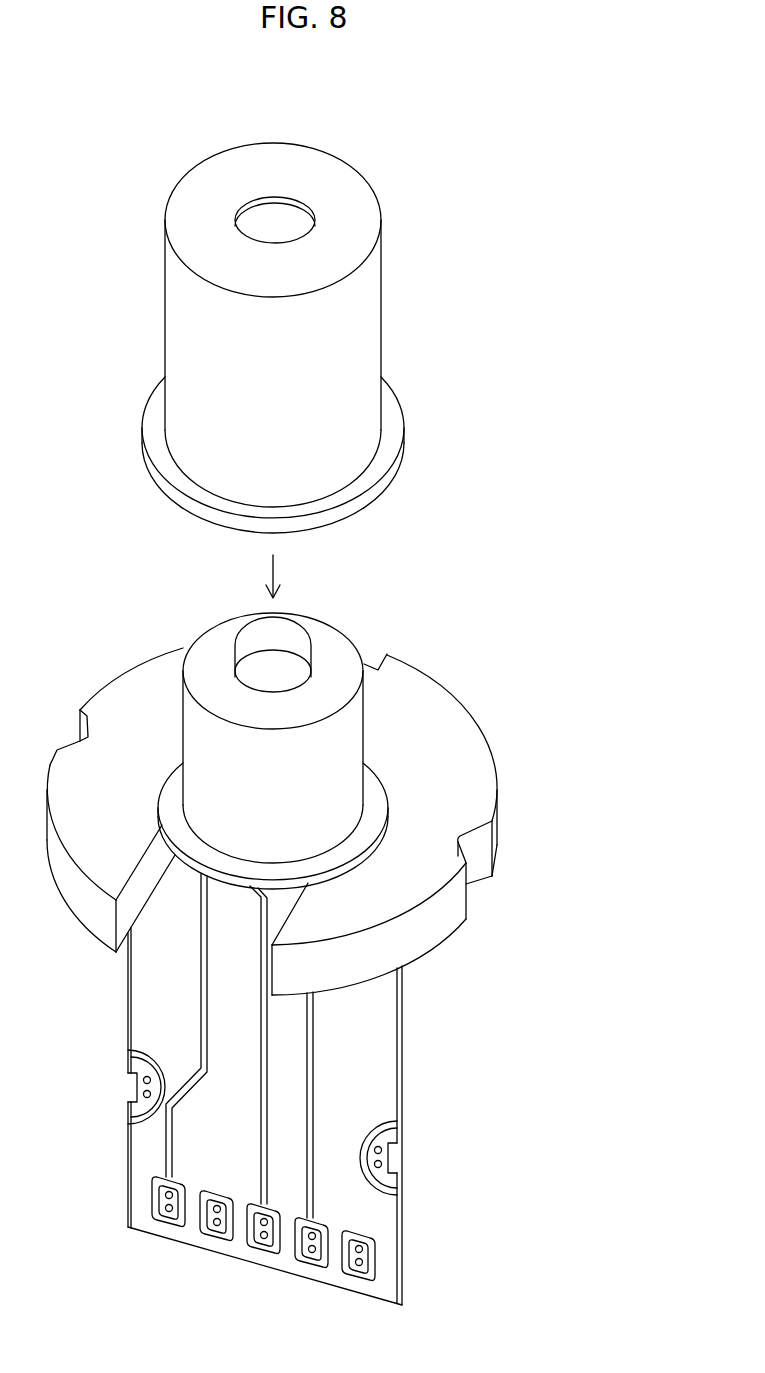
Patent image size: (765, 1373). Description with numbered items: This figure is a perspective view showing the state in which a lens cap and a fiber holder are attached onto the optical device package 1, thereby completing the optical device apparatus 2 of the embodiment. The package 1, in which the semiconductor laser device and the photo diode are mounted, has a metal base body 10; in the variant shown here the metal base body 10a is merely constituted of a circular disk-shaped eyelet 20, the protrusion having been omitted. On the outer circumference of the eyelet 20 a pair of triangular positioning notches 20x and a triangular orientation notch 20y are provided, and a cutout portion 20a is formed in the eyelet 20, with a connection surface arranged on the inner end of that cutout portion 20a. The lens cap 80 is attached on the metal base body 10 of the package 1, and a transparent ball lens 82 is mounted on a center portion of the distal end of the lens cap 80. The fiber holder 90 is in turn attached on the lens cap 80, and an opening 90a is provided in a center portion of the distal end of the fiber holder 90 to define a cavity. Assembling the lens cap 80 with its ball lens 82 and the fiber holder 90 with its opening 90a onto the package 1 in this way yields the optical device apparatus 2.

The optical device package 1 is at (403, 1067).
The optical device apparatus 2 is at (508, 510).
The metal base body 10 is at (327, 798).
The metal base body 10a is at (337, 821).
The eyelet 20 is at (462, 778).
The cutout portion 20a is at (160, 883).
The positioning notches 20x is at (80, 730).
The orientation notch 20y is at (372, 667).
The lens cap 80 is at (349, 724).
The transparent ball lens 82 is at (307, 624).
The fiber holder 90 is at (296, 329).
The opening 90a is at (278, 214).